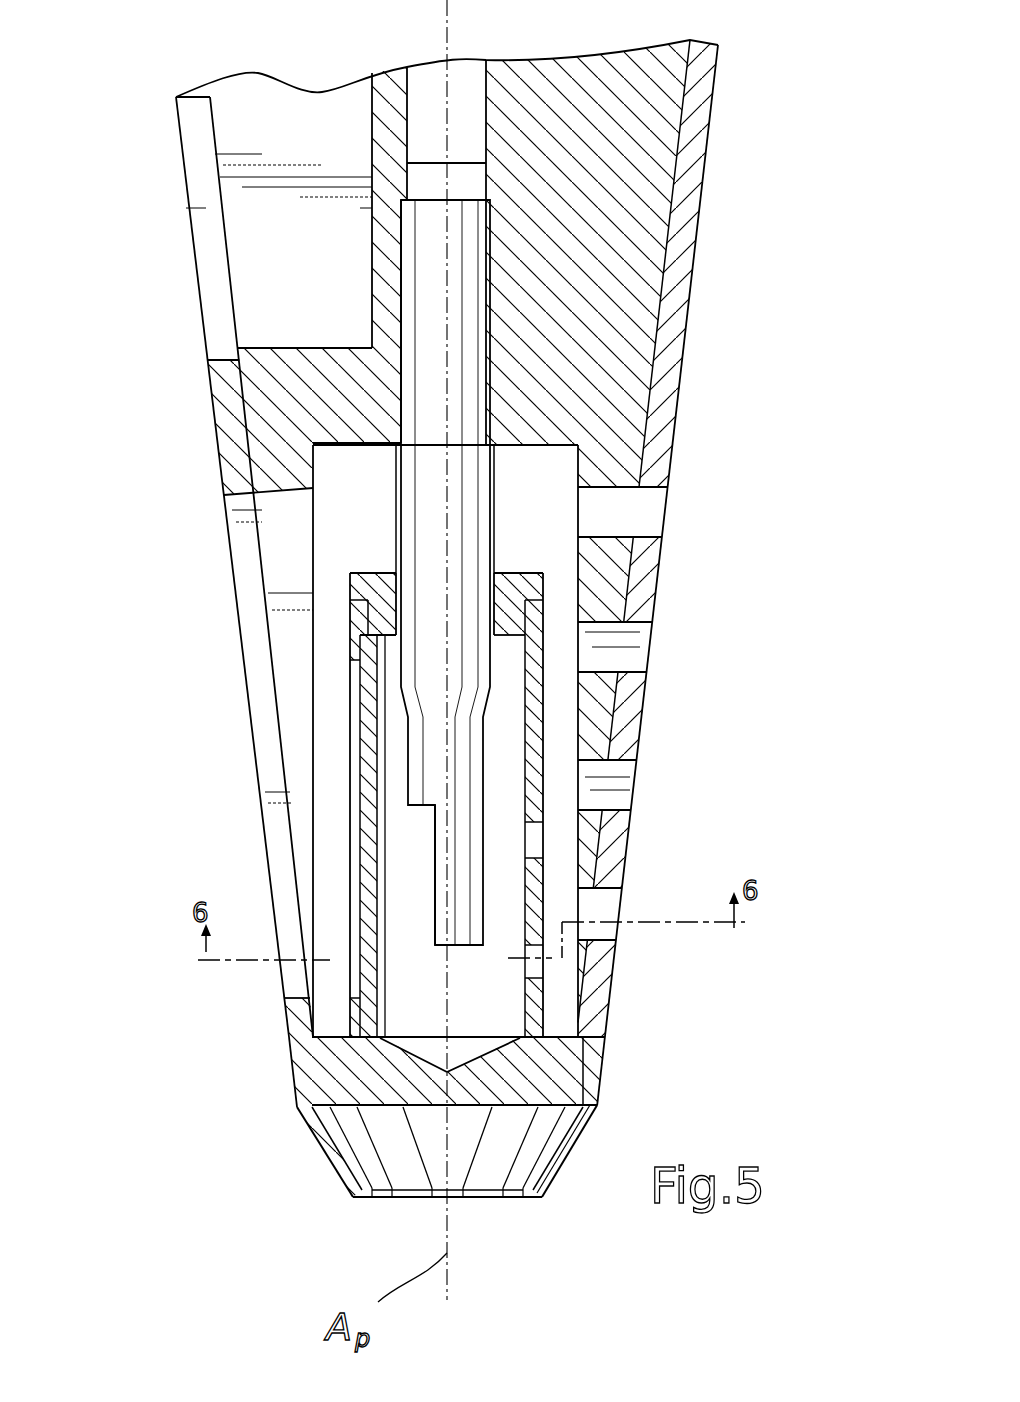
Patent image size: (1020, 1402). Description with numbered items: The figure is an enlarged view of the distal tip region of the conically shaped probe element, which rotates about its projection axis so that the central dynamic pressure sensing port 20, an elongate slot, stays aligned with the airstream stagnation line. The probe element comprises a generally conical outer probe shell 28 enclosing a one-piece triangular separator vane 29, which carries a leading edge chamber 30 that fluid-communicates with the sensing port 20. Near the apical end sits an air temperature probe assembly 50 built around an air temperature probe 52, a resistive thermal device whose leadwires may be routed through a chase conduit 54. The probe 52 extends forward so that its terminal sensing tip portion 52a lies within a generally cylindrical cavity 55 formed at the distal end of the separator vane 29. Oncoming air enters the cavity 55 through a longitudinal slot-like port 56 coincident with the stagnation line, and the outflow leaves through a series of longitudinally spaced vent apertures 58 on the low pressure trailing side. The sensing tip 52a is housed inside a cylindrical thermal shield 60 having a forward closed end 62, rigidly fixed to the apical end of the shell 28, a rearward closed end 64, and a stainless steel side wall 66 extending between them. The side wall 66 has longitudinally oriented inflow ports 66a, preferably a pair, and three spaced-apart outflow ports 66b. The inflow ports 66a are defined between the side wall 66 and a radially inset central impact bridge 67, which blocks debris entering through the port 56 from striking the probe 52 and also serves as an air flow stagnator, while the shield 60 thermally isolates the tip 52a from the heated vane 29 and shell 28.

The central dynamic pressure sensing port 20 is at (208, 290).
The outer probe shell 28 is at (709, 124).
The separator vane 29 is at (582, 213).
The leading edge chamber 30 is at (291, 291).
The air temperature probe assembly 50 is at (236, 993).
The air temperature probe 52 is at (448, 578).
The sensing tip portion 52a is at (436, 903).
The chase conduit 54 is at (457, 120).
The cylindrical cavity 55 is at (540, 488).
The port 56 is at (238, 556).
The vent apertures 58 is at (632, 512).
The thermal shield 60 is at (344, 636).
The forward closed end 62 is at (382, 1088).
The rearward closed end 64 is at (383, 598).
The side wall 66 is at (542, 603).
The inflow ports 66a is at (350, 690).
The outflow ports 66b is at (546, 698).
The impact bridge 67 is at (374, 777).